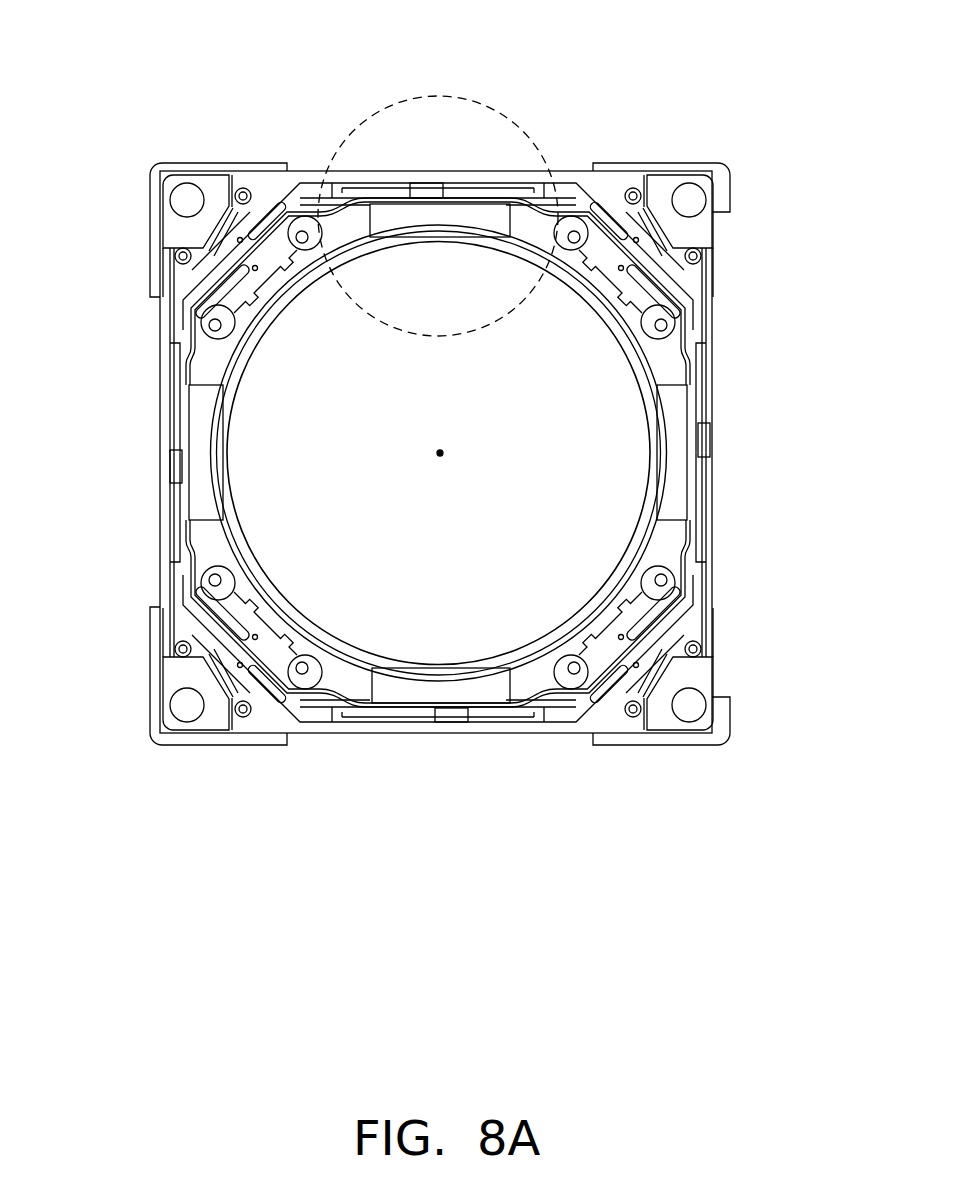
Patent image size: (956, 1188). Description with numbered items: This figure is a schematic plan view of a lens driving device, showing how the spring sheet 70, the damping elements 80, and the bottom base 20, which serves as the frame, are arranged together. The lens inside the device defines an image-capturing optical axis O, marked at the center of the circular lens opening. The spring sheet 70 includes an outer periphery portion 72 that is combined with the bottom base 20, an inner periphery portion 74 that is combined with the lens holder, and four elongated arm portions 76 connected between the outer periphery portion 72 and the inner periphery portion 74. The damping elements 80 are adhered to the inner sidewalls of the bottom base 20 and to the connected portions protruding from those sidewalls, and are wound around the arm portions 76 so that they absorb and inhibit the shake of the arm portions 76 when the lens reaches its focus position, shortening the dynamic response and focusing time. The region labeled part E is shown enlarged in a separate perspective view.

The bottom base 20 is at (205, 172).
The spring sheet 70 is at (362, 198).
The outer periphery portion 72 is at (268, 192).
The inner periphery portion 74 is at (607, 268).
The arm portions 76 is at (487, 198).
The damping elements 80 is at (424, 183).
The part E is at (533, 140).
The optical axis O is at (446, 453).